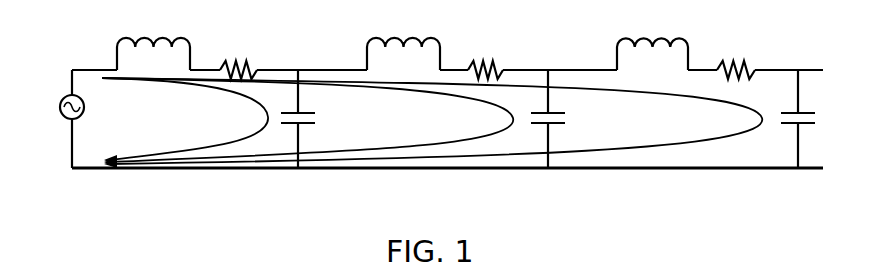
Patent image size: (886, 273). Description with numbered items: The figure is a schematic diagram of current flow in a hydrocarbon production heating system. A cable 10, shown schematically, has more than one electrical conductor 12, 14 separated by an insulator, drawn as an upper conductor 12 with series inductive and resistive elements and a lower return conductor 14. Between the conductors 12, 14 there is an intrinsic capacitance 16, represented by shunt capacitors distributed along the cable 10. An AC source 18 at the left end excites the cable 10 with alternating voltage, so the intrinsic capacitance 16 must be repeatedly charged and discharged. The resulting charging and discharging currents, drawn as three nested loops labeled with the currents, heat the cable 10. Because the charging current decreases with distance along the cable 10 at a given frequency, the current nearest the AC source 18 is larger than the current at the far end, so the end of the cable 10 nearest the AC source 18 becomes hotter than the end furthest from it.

The cable 10 is at (245, 177).
The electrical conductor 12 is at (285, 67).
The electrical conductor 14 is at (366, 170).
The intrinsic capacitance 16 is at (308, 103).
The AC source 18 is at (65, 97).